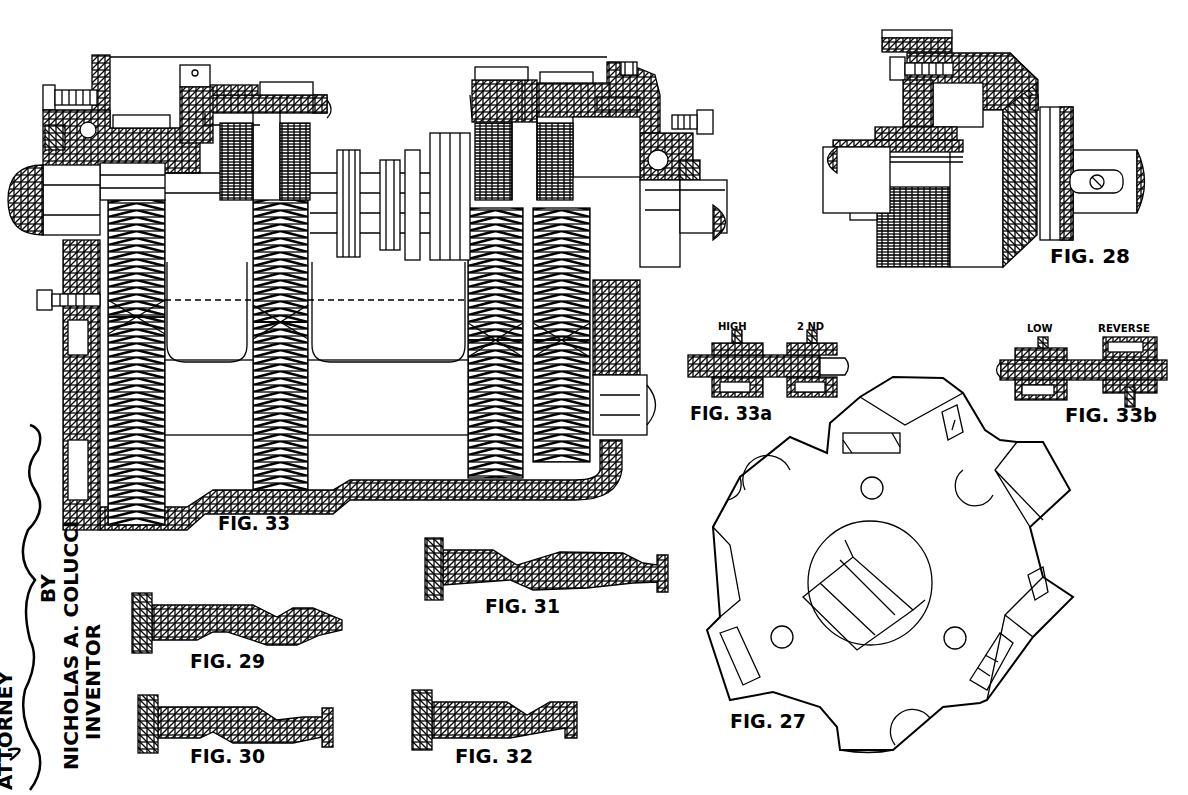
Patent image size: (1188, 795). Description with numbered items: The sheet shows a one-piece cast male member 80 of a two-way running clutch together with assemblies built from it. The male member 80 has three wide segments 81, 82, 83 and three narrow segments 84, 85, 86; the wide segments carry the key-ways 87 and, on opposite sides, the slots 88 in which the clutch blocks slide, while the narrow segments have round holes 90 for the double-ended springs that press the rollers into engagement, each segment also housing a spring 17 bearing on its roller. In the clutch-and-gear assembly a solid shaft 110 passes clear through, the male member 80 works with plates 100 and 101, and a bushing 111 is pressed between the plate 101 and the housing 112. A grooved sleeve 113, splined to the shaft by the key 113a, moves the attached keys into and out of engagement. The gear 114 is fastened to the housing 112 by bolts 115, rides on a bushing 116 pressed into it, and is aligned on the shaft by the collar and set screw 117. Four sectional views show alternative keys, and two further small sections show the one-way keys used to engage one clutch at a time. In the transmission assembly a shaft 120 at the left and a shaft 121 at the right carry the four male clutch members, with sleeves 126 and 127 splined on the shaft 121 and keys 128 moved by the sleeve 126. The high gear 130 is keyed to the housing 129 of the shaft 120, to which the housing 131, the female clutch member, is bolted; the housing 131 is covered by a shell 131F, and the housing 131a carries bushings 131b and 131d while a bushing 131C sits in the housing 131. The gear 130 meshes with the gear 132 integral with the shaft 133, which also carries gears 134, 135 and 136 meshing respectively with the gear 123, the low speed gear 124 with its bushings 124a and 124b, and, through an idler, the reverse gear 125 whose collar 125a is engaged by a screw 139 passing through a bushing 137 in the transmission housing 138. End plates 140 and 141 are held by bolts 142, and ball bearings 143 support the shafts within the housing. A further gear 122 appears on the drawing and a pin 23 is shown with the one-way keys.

In FIG. 33, the transmission housing 138 is at (97, 57).
In FIG. 33, the bolts 142 is at (48, 85).
In FIG. 33, the ball bearings 143 is at (60, 126).
In FIG. 33, the end plate 140 is at (55, 140).
In FIG. 33, the high gear 130 is at (120, 116).
In FIG. 33, the housing 131 is at (225, 88).
In FIG. 33, the cylindrical shell 131F is at (234, 84).
In FIG. 33, the bushing 131C is at (268, 82).
In FIG. 33, the bushing 131b is at (252, 88).
In FIG. 33, the housing 131a is at (322, 96).
In FIG. 33, the bushing 131d is at (327, 112).
In FIG. 33, the gear 123 is at (310, 84).
In FIG. 33, the high gear 122 is at (115, 222).
In FIG. 33, the low speed gear 124 is at (470, 68).
In FIG. 33, the bushing 124a is at (470, 118).
In FIG. 33, the bushing 124b is at (525, 80).
In FIG. 33, the reverse gear 125 is at (570, 72).
In FIG. 33, the collar 125a is at (607, 146).
In FIG. 33, the bushing 137 is at (603, 96).
In FIG. 33, the screw 139 is at (630, 62).
In FIG. 33, the end plate 141 is at (700, 172).
In FIG. 33, the shaft 121 is at (392, 235).
In FIG. 33, the sleeve 126 is at (350, 150).
In FIG. 33, the sleeve 127 is at (390, 160).
In FIG. 33, the keys 128 is at (440, 134).
In FIG. 33, the male member 80 is at (232, 165).
In FIG. 27, the male member 80 is at (930, 555).
In FIG. 33, the housing 129 is at (108, 190).
In FIG. 33, the shaft 120 is at (30, 236).
In FIG. 33, the shaft 133 is at (403, 372).
In FIG. 33, the gear 132 is at (163, 492).
In FIG. 33, the gear 134 is at (305, 462).
In FIG. 33, the gear 135 is at (468, 460).
In FIG. 33, the gear 136 is at (575, 458).
In FIG. 28, the gear 114 is at (884, 34).
In FIG. 28, the housing 112 is at (980, 62).
In FIG. 28, the plate 100 is at (975, 112).
In FIG. 28, the bolts 115 is at (890, 65).
In FIG. 28, the collar and set screw 117 is at (880, 127).
In FIG. 28, the bushing 116 is at (925, 152).
In FIG. 28, the solid shaft 110 is at (827, 148).
In FIG. 28, the sleeve 113 is at (1062, 127).
In FIG. 28, the key 113a is at (1082, 172).
In FIG. 28, the bushing 111 is at (1036, 88).
In FIG. 28, the plate 101 is at (1040, 100).
In FIG. 33a, the shift pin 23 is at (745, 337).
In FIG. 33b, the shift pin 23 is at (1050, 342).
In FIG. 33a, the spring 17 is at (808, 397).
In FIG. 33b, the spring 17 is at (1040, 400).
In FIG. 27, the wide segment 81 is at (893, 380).
In FIG. 27, the narrow segment 84 is at (1055, 469).
In FIG. 27, the wide segment 82 is at (1060, 630).
In FIG. 27, the wide segment 83 is at (718, 657).
In FIG. 27, the narrow segment 85 is at (865, 752).
In FIG. 27, the narrow segment 86 is at (728, 502).
In FIG. 27, the slots 88 is at (955, 438).
In FIG. 27, the round holes 90 is at (785, 470).
In FIG. 27, the key-ways 87 is at (893, 453).